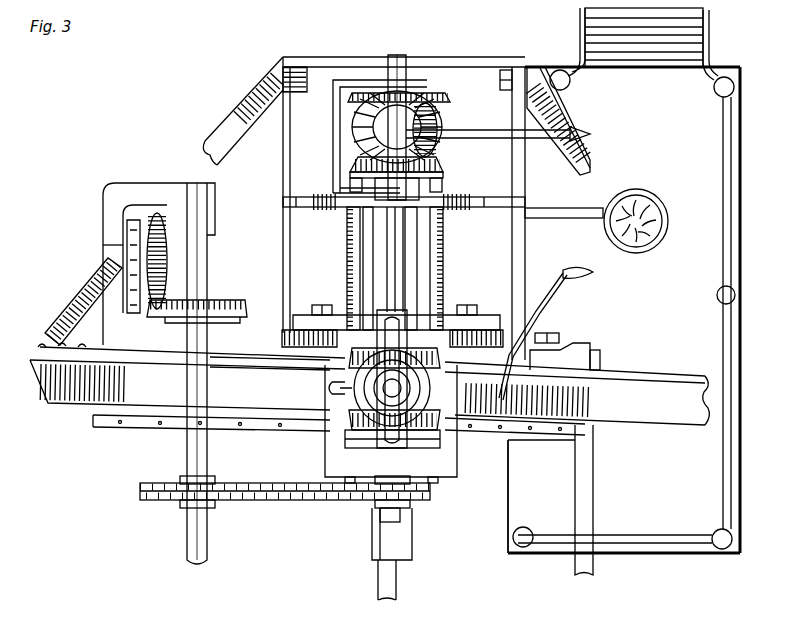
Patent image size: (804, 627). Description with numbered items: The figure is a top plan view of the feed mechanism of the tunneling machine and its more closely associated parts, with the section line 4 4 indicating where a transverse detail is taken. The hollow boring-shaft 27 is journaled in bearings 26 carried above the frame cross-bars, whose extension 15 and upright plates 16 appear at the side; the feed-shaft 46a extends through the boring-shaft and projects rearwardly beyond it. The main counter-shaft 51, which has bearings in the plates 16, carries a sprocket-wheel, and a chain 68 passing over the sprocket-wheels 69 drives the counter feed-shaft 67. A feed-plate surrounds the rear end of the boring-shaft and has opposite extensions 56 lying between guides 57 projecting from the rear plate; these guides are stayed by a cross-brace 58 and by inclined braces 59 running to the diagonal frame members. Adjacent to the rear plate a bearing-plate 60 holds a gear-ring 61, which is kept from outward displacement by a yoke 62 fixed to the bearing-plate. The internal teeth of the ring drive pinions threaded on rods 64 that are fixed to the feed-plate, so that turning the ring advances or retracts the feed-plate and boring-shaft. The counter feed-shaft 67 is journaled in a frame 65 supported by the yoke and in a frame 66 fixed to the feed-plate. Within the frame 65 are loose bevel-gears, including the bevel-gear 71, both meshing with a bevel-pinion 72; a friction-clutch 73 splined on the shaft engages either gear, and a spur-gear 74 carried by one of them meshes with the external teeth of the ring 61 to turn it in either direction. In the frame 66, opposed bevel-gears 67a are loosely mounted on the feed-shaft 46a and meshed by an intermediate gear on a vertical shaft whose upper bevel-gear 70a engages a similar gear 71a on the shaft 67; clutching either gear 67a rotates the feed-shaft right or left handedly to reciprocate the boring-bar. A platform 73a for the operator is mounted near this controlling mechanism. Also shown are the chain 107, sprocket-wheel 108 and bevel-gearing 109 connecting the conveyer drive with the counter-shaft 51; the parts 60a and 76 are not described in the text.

The section line 4 4 is at (455, 300).
The cross-bar extension 15 is at (62, 406).
The plates 16 is at (255, 425).
The bearings 26 is at (455, 470).
The hollow boring-shaft 27 is at (378, 538).
The feed-shaft 46a is at (382, 580).
The counter-shaft 51 is at (190, 532).
The extensions 56 is at (296, 207).
The guides 57 is at (281, 232).
The cross-brace 58 is at (430, 72).
The inclined braces 59 is at (240, 105).
The bearing-plate 60 is at (570, 356).
The bevel pinion 60a is at (433, 128).
The gear-ring 61 is at (284, 320).
The yoke 62 is at (471, 326).
The threaded rods 64 is at (350, 250).
The frame 65 is at (470, 205).
The frame 66 is at (332, 173).
The counter feed-shaft 67 is at (400, 292).
The opposed bevel-gears 67a is at (447, 73).
The chain 68 is at (312, 501).
The sprocket-wheels 69 is at (180, 504).
The bevel-gear 70a is at (356, 144).
The bevel-gear 71 is at (442, 440).
The bevel-gear 71a is at (445, 168).
The bevel-pinion 72 is at (368, 394).
The friction-clutch 73 is at (504, 263).
The platform 73a is at (638, 249).
The spur-gear 74 is at (437, 342).
The shaft 76 is at (358, 362).
The chain 107 is at (128, 298).
The sprocket-wheel 108 is at (132, 240).
The bevel-gearing 109 is at (166, 302).